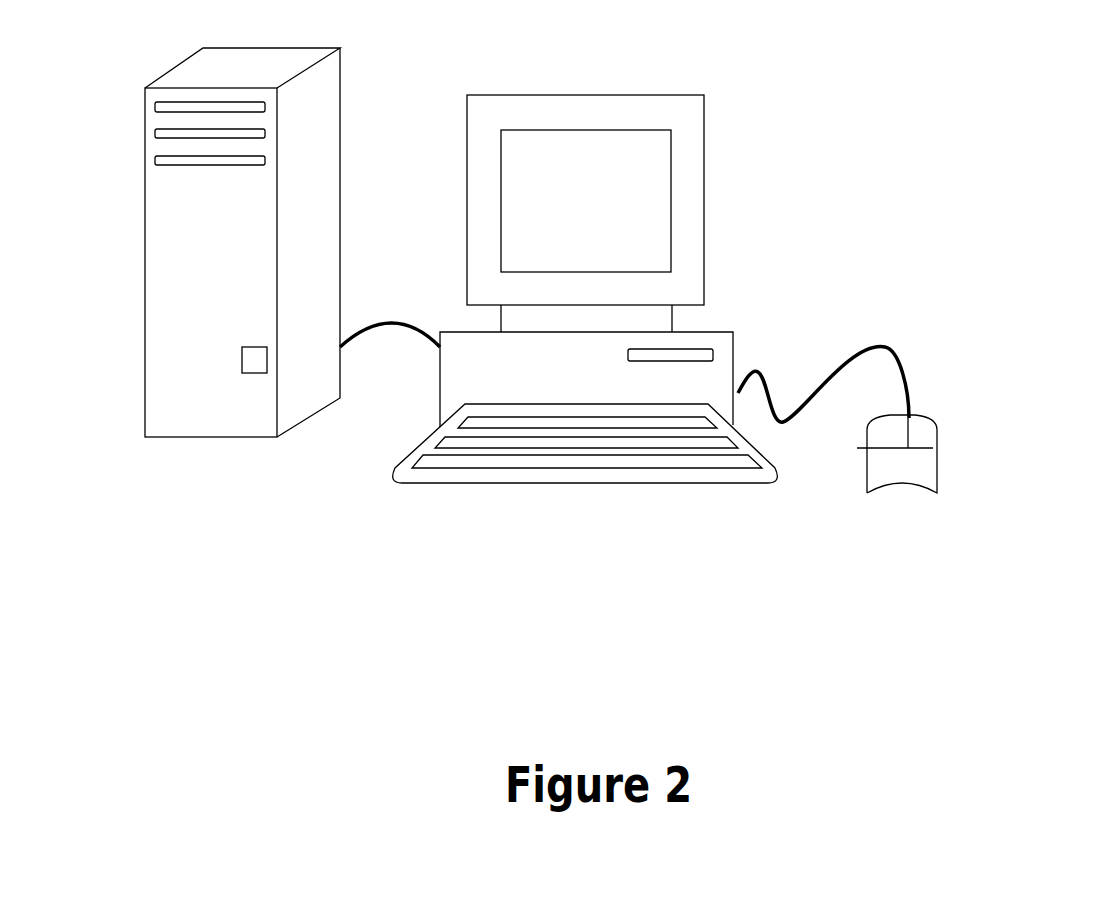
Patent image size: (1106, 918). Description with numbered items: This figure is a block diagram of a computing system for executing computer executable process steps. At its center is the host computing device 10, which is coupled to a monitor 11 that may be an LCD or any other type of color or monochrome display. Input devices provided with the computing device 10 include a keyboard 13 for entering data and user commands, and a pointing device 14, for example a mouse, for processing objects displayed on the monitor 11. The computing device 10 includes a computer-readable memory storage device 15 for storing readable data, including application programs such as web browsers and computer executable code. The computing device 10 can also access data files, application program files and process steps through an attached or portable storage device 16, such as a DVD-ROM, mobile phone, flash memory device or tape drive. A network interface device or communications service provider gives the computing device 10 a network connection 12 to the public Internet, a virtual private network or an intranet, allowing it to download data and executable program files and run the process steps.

The host computing device 10 is at (704, 119).
The monitor 11 is at (645, 225).
The network connection 12 is at (243, 420).
The keyboard 13 is at (645, 485).
The pointing device 14 is at (907, 468).
The computer-readable memory storage device 15 is at (243, 120).
The portable storage device 16 is at (195, 170).